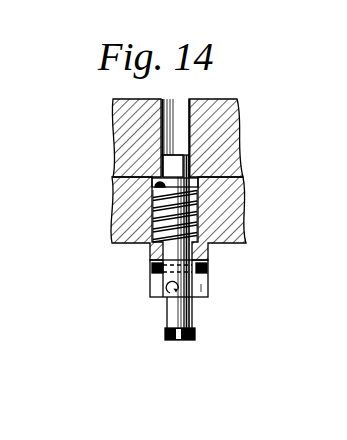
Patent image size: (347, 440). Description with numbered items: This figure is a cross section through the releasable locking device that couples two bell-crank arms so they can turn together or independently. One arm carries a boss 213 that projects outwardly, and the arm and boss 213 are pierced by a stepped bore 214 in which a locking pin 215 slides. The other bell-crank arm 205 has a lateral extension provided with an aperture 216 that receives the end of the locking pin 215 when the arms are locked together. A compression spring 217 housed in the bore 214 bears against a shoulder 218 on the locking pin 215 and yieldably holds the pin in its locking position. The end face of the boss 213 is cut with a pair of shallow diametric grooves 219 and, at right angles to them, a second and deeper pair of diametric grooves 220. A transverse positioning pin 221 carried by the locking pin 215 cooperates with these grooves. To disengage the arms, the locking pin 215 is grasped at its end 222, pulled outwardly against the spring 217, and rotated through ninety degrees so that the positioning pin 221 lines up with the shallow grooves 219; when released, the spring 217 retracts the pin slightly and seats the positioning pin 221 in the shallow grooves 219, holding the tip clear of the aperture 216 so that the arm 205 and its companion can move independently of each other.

The bell-crank arm 205 is at (220, 144).
The boss 213 is at (150, 281).
The stepped bore 214 is at (138, 203).
The locking pin 215 is at (170, 167).
The aperture 216 is at (178, 128).
The compression spring 217 is at (193, 218).
The shoulder 218 is at (150, 183).
The shallow diametric grooves 219 is at (157, 297).
The deep diametric grooves 220 is at (230, 292).
The positioning pin 221 is at (205, 266).
The end of the locking pin 222 is at (177, 334).